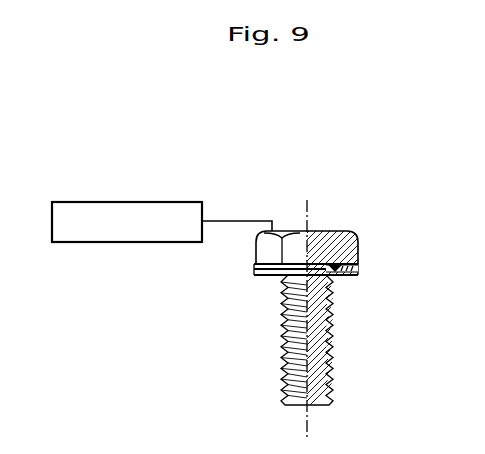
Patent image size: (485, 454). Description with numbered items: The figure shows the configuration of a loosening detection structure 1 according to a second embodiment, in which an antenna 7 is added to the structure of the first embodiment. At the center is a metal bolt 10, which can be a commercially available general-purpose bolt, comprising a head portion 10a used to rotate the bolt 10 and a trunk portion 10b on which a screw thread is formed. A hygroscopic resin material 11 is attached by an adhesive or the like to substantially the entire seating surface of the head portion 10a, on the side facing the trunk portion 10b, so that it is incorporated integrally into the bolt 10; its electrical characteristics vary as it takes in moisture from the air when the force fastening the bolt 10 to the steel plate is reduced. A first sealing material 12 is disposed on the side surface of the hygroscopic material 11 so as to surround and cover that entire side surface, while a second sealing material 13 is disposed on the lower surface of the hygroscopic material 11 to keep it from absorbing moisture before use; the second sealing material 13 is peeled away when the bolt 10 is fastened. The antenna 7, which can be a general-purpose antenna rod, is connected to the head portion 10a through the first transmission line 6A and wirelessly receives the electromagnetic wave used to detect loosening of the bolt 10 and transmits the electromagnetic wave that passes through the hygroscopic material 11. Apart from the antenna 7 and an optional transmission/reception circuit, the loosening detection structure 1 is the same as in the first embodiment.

The loosening detection structure 1 is at (229, 144).
The antenna 7 is at (128, 202).
The first transmission line 6A is at (231, 221).
The bolt 10 is at (306, 317).
The head portion 10a is at (341, 232).
The trunk portion 10b is at (333, 381).
The hygroscopic resin material 11 is at (347, 268).
The first sealing material 12 is at (256, 265).
The second sealing material 13 is at (256, 276).